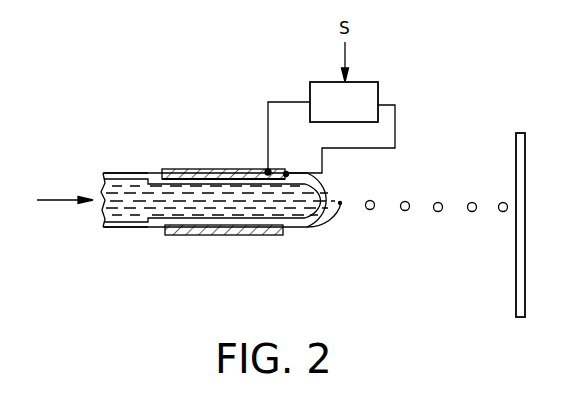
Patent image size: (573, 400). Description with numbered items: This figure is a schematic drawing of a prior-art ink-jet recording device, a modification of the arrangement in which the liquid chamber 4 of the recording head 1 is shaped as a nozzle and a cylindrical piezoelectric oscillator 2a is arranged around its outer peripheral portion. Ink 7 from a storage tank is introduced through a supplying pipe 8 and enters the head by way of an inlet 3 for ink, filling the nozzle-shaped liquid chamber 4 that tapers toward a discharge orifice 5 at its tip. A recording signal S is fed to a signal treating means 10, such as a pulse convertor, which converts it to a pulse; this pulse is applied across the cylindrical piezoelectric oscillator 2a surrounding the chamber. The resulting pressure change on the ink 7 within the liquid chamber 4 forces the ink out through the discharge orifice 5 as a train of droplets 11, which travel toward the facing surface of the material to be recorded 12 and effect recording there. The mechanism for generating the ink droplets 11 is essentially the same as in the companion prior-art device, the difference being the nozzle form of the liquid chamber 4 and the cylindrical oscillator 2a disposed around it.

The recording head 1 is at (208, 162).
The piezoelectric oscillator 2a is at (208, 235).
The inlet for ink 3 is at (156, 182).
The liquid chamber 4 is at (300, 224).
The discharge orifice 5 is at (346, 206).
The ink 7 is at (120, 188).
The supplying pipe 8 is at (127, 226).
The signal treating means 10 is at (376, 82).
The droplets 11 is at (440, 202).
The material to be recorded 12 is at (525, 238).